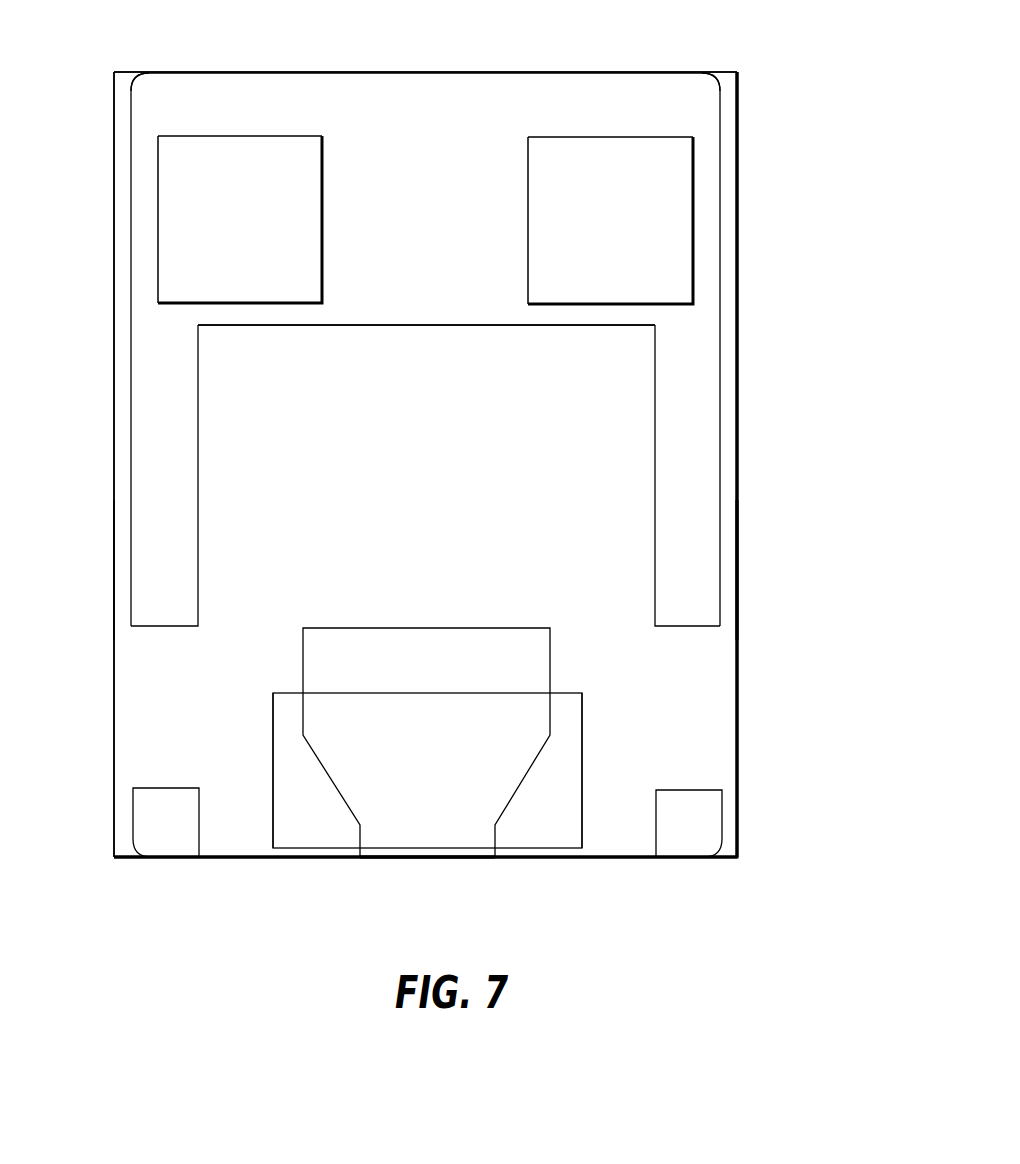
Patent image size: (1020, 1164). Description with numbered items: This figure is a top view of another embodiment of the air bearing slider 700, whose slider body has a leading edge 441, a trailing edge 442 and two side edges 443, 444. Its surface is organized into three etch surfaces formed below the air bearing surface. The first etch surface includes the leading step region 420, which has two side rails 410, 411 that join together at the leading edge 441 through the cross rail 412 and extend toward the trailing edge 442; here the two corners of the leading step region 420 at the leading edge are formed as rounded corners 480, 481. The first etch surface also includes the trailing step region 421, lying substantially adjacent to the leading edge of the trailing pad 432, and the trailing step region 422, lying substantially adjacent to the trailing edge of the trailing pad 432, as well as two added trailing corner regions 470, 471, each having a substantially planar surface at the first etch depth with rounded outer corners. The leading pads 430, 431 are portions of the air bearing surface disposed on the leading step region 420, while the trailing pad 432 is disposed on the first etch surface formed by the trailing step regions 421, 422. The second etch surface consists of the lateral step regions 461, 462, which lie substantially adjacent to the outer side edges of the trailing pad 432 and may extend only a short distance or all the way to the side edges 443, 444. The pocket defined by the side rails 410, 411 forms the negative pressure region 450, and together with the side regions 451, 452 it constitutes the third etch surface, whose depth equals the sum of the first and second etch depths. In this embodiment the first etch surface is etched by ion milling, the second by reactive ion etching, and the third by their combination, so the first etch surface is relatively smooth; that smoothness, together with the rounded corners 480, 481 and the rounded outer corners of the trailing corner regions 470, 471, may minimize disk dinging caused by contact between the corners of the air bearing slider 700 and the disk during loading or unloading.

The air bearing slider 700 is at (888, 152).
The leading edge 441 is at (462, 72).
The trailing edge 442 is at (235, 858).
The side edge 443 is at (740, 832).
The side edge 444 is at (116, 733).
The leading step region 420 is at (710, 391).
The rounded corner 480 is at (160, 93).
The rounded corner 481 is at (685, 93).
The side rail 411 is at (181, 484).
The side rail 410 is at (704, 487).
The cross rail 412 is at (449, 301).
The negative pressure region 450 is at (449, 445).
The side region 451 is at (730, 570).
The side region 452 is at (120, 563).
The leading pad 430 is at (256, 217).
The leading pad 431 is at (632, 219).
The trailing step region 421 is at (491, 637).
The trailing step region 422 is at (442, 858).
The trailing pad 432 is at (447, 742).
The lateral step region 461 is at (570, 752).
The lateral step region 462 is at (284, 755).
The trailing corner region 470 is at (187, 828).
The trailing corner region 471 is at (709, 835).